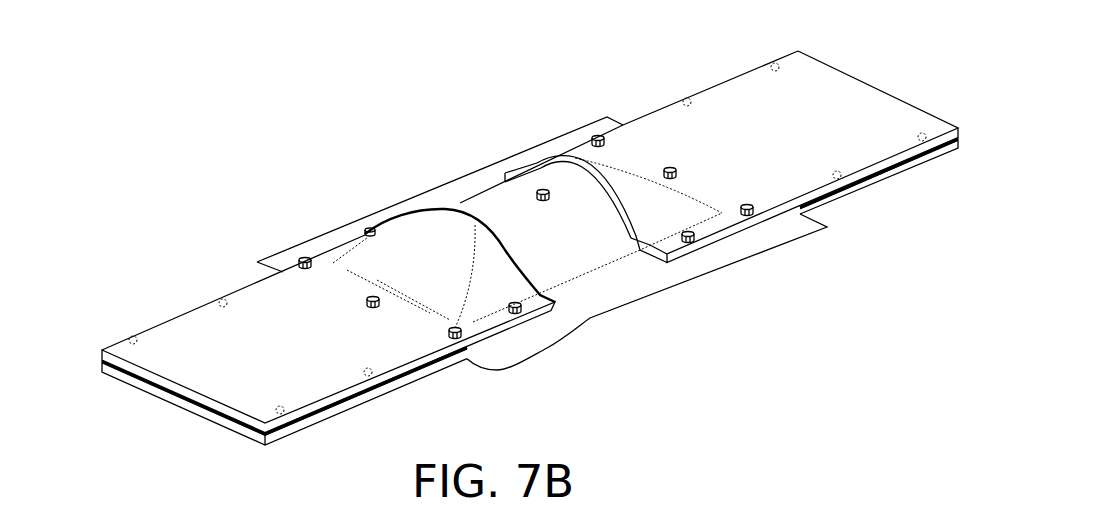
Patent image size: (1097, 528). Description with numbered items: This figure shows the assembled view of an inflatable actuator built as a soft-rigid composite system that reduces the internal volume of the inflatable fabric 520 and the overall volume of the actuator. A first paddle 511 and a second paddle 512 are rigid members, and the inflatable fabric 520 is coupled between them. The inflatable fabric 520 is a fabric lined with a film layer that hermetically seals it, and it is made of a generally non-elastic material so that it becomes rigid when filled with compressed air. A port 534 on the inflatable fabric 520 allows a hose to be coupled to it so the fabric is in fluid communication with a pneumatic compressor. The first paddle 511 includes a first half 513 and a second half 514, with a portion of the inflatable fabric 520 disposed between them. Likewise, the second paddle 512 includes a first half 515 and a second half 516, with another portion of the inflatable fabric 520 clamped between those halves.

The first paddle 511 is at (178, 326).
The second paddle 512 is at (752, 95).
The first half 513 is at (133, 367).
The second half 514 is at (165, 397).
The first half 515 is at (867, 172).
The second half 516 is at (832, 200).
The inflatable fabric 520 is at (493, 202).
The port 534 is at (543, 188).